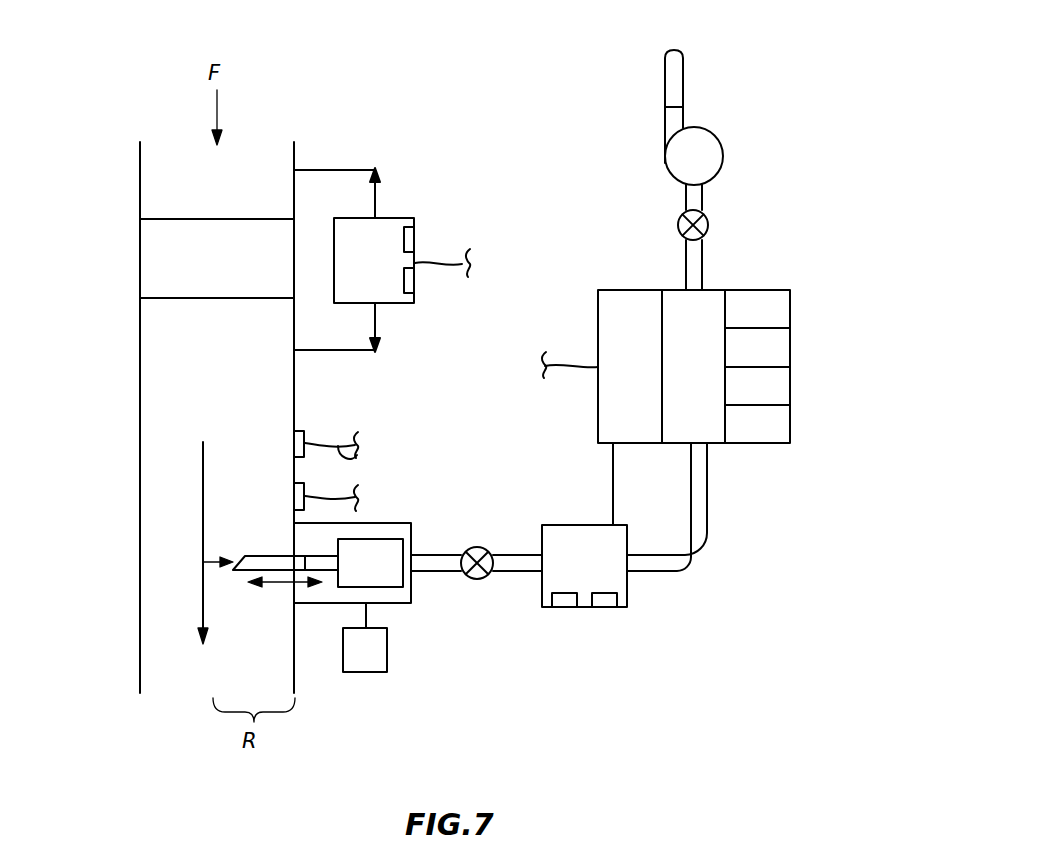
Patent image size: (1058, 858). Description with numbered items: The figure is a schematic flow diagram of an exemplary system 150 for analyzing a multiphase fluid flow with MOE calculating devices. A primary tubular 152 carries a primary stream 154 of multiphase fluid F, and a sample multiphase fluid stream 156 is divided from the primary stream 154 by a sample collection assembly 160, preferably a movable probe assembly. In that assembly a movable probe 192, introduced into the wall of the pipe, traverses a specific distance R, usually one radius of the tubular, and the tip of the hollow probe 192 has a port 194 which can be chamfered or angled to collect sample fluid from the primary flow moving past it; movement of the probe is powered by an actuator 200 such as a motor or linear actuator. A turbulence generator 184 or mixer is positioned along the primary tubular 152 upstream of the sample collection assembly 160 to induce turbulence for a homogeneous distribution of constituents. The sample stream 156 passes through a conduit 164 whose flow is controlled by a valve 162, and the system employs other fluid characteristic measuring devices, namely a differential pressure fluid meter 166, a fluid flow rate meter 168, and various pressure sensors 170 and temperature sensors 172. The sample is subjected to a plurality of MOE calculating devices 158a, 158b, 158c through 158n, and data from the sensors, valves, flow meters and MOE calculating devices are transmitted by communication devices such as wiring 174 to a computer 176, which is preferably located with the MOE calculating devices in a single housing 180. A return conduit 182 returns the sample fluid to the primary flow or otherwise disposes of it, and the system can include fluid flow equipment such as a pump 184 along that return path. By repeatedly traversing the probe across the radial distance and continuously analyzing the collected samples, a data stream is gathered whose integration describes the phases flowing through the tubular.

The system 150 is at (455, 72).
The primary tubular 152 is at (140, 383).
The primary stream 154 is at (203, 512).
The sample multiphase fluid stream 156 is at (203, 558).
The MOE calculating device 158a is at (775, 428).
The MOE calculating device 158b is at (772, 387).
The MOE calculating device 158c is at (767, 350).
The MOE calculating device 158n is at (770, 313).
The sample collection assembly 160 is at (385, 514).
The valve 162 is at (478, 580).
The conduit 164 is at (508, 573).
The differential pressure fluid meter 166 is at (395, 272).
The fluid flow rate meter 168 is at (605, 573).
The pressure sensor 170 is at (415, 237).
The temperature sensor 172 is at (415, 287).
The wiring 174 is at (562, 366).
The computer 176 is at (652, 383).
The housing 180 is at (758, 443).
The return conduit 182 is at (683, 77).
The pump / turbulence generator 184 is at (235, 273).
The movable probe 192 is at (282, 586).
The port 194 is at (231, 570).
The actuator 200 is at (373, 672).